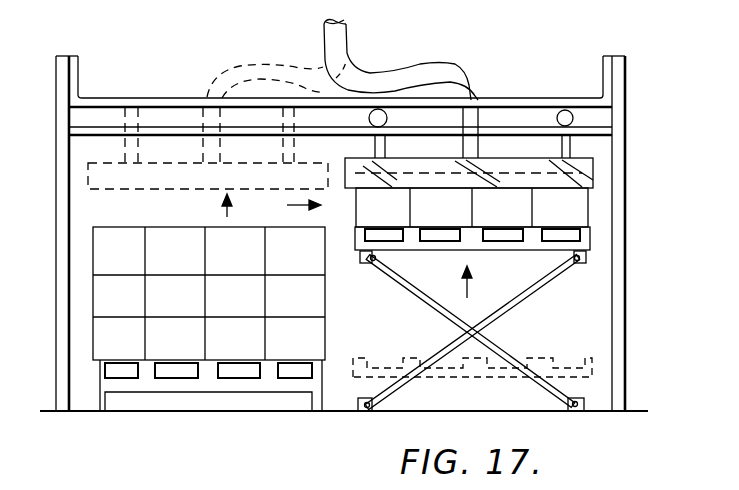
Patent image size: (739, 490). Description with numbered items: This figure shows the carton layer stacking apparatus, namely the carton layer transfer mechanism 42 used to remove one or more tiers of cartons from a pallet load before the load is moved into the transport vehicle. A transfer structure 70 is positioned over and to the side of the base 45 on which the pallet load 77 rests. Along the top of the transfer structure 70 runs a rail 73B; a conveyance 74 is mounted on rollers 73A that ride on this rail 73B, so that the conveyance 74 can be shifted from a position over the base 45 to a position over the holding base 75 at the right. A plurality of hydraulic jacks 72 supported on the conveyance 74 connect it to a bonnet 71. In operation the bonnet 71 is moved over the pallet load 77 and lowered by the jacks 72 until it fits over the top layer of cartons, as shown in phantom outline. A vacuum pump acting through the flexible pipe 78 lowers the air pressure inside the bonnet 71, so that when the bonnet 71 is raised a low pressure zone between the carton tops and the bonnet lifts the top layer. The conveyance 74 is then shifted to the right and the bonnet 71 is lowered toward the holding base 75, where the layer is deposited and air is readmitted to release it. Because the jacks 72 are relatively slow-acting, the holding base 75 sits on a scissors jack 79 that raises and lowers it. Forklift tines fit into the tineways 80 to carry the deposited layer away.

The carton layer transfer mechanism 42 is at (391, 53).
The base 45 is at (140, 410).
The transfer structure 70 is at (618, 94).
The bonnet 71 is at (592, 163).
The hydraulic jacks 72 is at (568, 140).
The rollers 73A is at (568, 110).
The rail 73B is at (548, 90).
The conveyance 74 is at (340, 97).
The holding base 75 is at (585, 252).
The pallet load 77 is at (338, 318).
The flexible pipe 78 is at (408, 72).
The scissors jack 79 is at (512, 298).
The tineways 80 is at (585, 233).